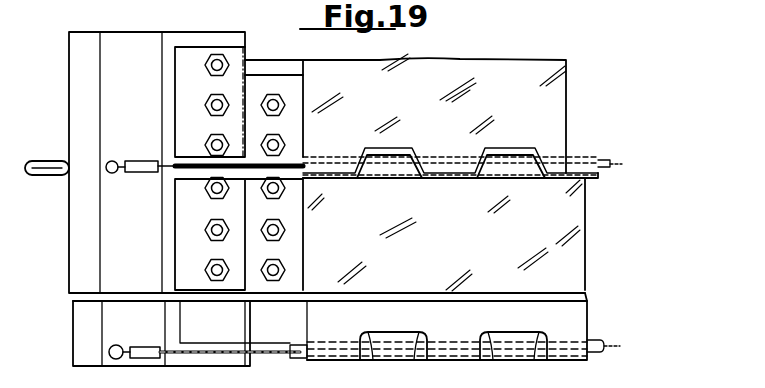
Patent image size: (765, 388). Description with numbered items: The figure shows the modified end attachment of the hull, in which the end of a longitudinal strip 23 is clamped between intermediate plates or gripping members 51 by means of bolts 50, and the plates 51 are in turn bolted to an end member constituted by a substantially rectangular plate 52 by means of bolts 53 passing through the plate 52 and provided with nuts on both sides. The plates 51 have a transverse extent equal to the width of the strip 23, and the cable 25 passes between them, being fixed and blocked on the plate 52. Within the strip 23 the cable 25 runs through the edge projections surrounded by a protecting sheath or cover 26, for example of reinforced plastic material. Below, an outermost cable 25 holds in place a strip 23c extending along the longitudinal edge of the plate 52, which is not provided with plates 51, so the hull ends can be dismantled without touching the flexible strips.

The rectangular plate 52 is at (77, 70).
The intermediate plate 51 is at (267, 47).
The bolt 50 is at (270, 142).
The bolt 53 is at (210, 68).
The longitudinal strip 23 is at (333, 68).
The cable 25 is at (192, 170).
The protecting sheath 26 is at (582, 158).
The strip 23c is at (400, 362).